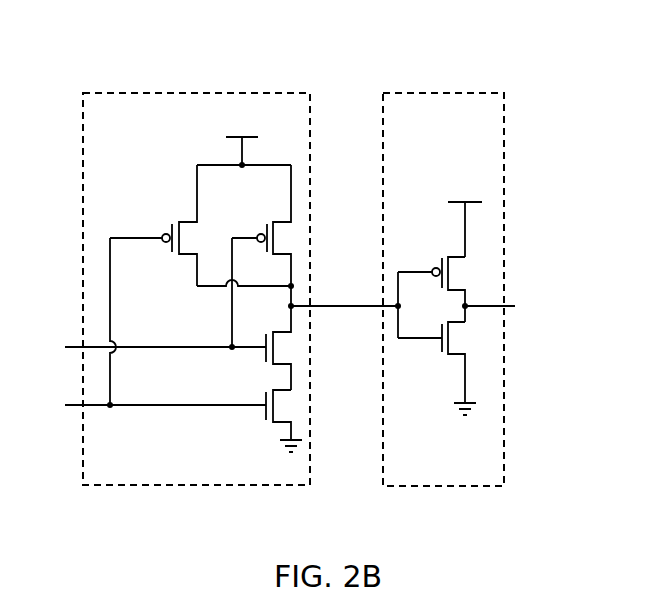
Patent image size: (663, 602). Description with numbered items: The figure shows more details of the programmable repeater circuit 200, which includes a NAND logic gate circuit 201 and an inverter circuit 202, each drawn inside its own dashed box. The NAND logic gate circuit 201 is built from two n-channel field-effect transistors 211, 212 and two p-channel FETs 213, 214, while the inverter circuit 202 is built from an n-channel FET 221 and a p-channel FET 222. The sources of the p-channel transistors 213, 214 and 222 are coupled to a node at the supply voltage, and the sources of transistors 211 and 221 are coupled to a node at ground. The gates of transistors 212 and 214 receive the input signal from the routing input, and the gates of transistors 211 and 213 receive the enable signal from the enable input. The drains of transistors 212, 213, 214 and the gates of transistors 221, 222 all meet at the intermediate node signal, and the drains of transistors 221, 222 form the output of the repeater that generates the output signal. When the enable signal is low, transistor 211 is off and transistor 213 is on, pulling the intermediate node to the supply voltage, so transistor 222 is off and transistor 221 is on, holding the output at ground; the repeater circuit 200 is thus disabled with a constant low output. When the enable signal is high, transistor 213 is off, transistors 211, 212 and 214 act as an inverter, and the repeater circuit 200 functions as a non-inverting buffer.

The programmable repeater circuit 200 is at (141, 62).
The NAND logic gate circuit 201 is at (231, 93).
The inverter circuit 202 is at (440, 93).
The n-channel field-effect transistor 211 is at (264, 415).
The n-channel field-effect transistor 212 is at (264, 357).
The p-channel field-effect transistor 213 is at (170, 224).
The p-channel field-effect transistor 214 is at (267, 224).
The n-channel field-effect transistor 221 is at (440, 348).
The p-channel field-effect transistor 222 is at (440, 260).